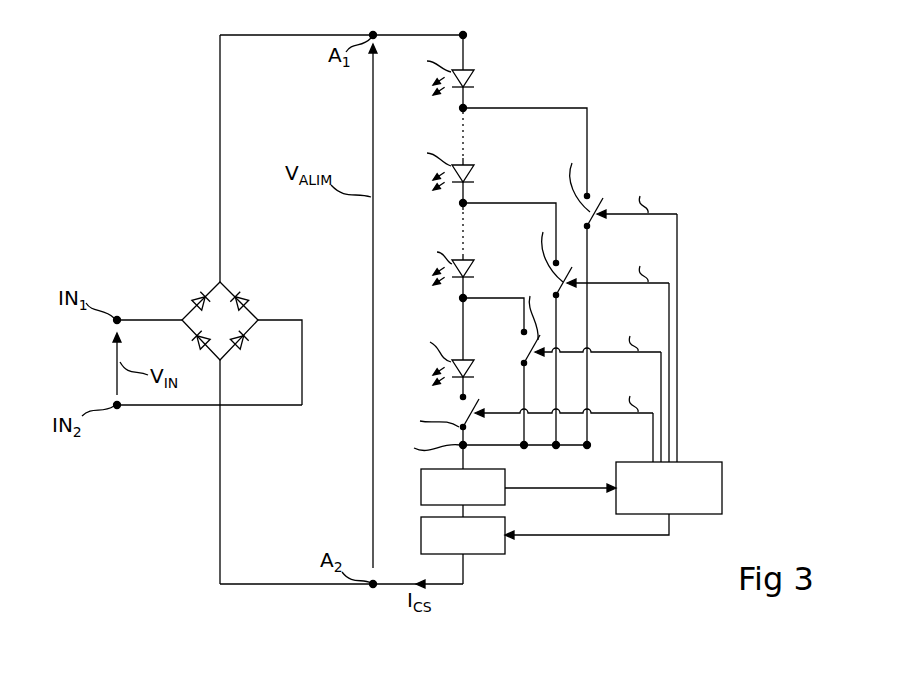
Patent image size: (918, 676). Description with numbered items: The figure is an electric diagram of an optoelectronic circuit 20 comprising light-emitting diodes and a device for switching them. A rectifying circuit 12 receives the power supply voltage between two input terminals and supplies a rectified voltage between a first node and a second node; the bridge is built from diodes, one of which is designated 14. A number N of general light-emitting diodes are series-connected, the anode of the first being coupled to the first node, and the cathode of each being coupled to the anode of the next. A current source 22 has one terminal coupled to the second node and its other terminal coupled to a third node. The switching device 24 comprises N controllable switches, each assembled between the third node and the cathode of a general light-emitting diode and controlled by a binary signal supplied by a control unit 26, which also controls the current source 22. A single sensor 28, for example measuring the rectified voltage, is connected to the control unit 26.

The rectifying circuit 12 is at (248, 296).
The diode 14 is at (248, 300).
The optoelectronic circuit 20 is at (693, 80).
The current source 22 is at (487, 556).
The device for switching general light-emitting diodes 24 is at (710, 338).
The control unit 26 is at (723, 495).
The sensor 28 is at (507, 480).